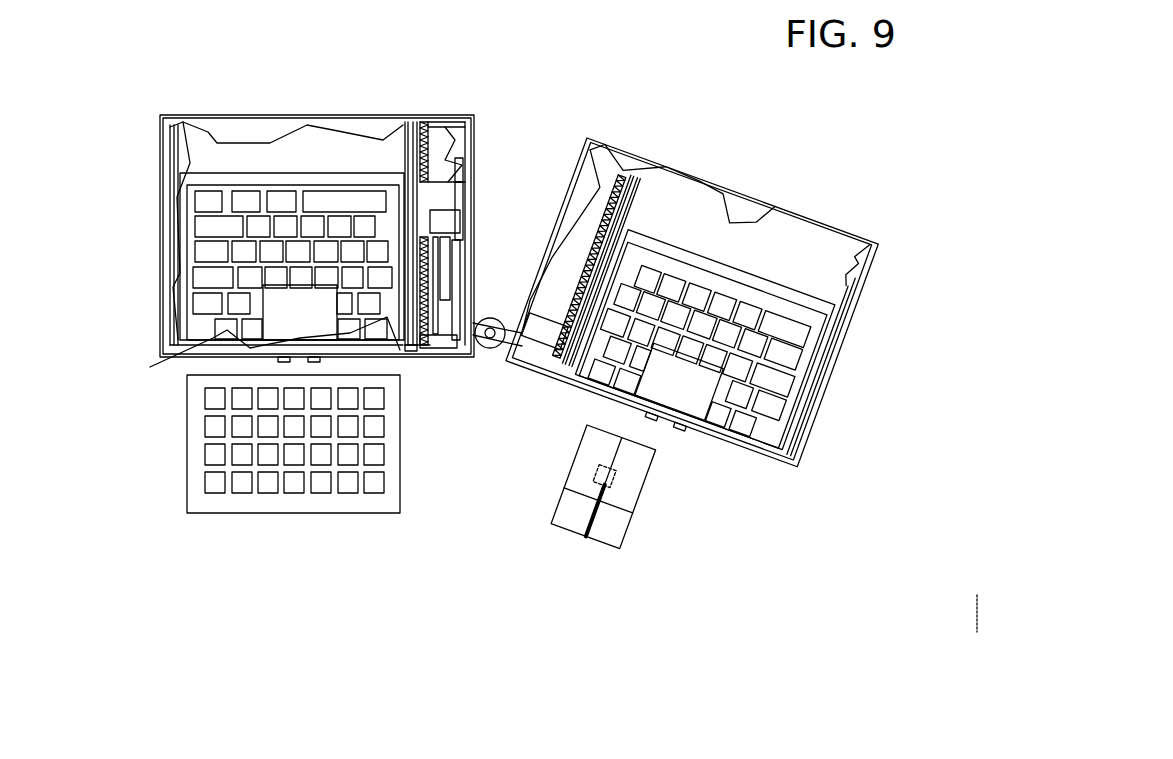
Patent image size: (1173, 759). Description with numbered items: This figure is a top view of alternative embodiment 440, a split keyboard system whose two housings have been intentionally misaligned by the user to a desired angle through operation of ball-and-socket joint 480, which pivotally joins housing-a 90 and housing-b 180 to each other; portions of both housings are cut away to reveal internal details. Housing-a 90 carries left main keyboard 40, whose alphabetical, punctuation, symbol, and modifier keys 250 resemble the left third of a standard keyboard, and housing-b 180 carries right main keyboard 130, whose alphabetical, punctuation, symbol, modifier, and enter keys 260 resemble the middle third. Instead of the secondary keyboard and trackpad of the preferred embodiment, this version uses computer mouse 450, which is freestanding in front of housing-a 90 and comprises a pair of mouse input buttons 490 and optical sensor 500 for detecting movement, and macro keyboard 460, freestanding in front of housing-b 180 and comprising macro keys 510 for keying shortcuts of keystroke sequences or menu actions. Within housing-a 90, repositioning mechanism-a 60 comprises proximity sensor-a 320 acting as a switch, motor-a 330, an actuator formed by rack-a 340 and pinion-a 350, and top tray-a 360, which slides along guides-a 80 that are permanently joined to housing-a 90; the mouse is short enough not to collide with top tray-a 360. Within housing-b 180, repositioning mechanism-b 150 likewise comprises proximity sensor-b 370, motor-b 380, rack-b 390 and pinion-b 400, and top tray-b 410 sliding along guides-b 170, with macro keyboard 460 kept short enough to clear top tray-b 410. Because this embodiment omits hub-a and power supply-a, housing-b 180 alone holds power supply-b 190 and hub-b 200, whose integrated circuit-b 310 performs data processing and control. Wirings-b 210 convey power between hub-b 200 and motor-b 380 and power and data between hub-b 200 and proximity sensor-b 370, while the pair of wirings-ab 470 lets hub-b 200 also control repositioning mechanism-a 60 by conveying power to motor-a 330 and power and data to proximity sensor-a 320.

The left main keyboard 40 is at (790, 382).
The repositioning mechanism-a 60 is at (543, 412).
The guides-a 80 is at (637, 208).
The housing-a 90 is at (873, 275).
The right main keyboard 130 is at (202, 330).
The repositioning mechanism-b 150 is at (440, 392).
The guides-b 170 is at (180, 225).
The housing-b 180 is at (170, 140).
The power supply-b 190 is at (447, 135).
The hub-b 200 is at (443, 190).
The wirings-b 210 is at (437, 160).
The alphabetical, punctuation, symbol, and modifier keys 250 is at (763, 410).
The alphabetical, punctuation, symbol, modifier, and enter keys 260 is at (203, 302).
The integrated circuit-b 310 is at (450, 220).
The proximity sensor-a 320 is at (688, 387).
The motor-a 330 is at (535, 337).
The rack-a 340 is at (637, 195).
The pinion-a 350 is at (563, 357).
The top tray-a 360 is at (633, 220).
The proximity sensor-b 370 is at (273, 308).
The motor-b 380 is at (443, 330).
The rack-b 390 is at (420, 133).
The pinion-b 400 is at (450, 335).
The top tray-b 410 is at (182, 227).
The alternative embodiment 440 is at (590, 88).
The computer mouse 450 is at (638, 507).
The macro keyboard 460 is at (212, 505).
The wirings-ab 470 is at (497, 293).
The ball-and-socket joint 480 is at (517, 313).
The mouse input buttons 490 is at (585, 537).
The optical sensor 500 is at (615, 472).
The macro keys 510 is at (213, 480).